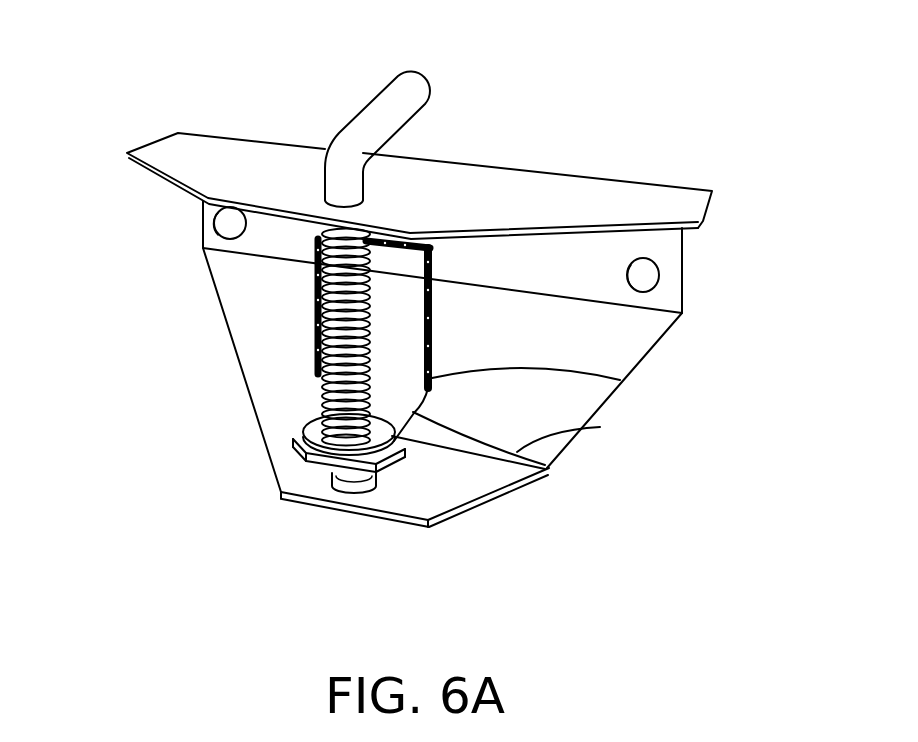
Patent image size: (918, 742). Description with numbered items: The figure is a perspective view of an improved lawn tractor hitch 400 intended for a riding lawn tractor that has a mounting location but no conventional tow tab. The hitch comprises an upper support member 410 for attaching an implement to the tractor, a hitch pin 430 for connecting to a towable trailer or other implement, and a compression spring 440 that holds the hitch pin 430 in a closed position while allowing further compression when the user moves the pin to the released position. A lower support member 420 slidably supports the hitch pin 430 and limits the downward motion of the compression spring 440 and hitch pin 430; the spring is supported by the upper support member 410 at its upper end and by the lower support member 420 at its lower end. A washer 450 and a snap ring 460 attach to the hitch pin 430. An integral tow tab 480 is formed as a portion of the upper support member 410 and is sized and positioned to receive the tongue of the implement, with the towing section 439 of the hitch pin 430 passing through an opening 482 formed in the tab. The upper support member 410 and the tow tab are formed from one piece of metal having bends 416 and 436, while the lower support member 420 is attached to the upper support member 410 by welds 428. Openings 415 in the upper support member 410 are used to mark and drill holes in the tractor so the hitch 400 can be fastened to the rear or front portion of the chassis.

The improved lawn tractor hitch 400 is at (166, 96).
The upper support member 410 is at (442, 182).
The openings 415 is at (216, 239).
The bend 416 is at (638, 182).
The lower support member 420 is at (548, 469).
The welds 428 is at (318, 311).
The hitch pin 430 is at (368, 118).
The bend 436 is at (600, 427).
The towing section 439 is at (330, 466).
The compression spring 440 is at (318, 350).
The washer 450 is at (317, 420).
The snap ring 460 is at (392, 474).
The integral tow tab 480 is at (393, 505).
The opening 482 is at (328, 478).